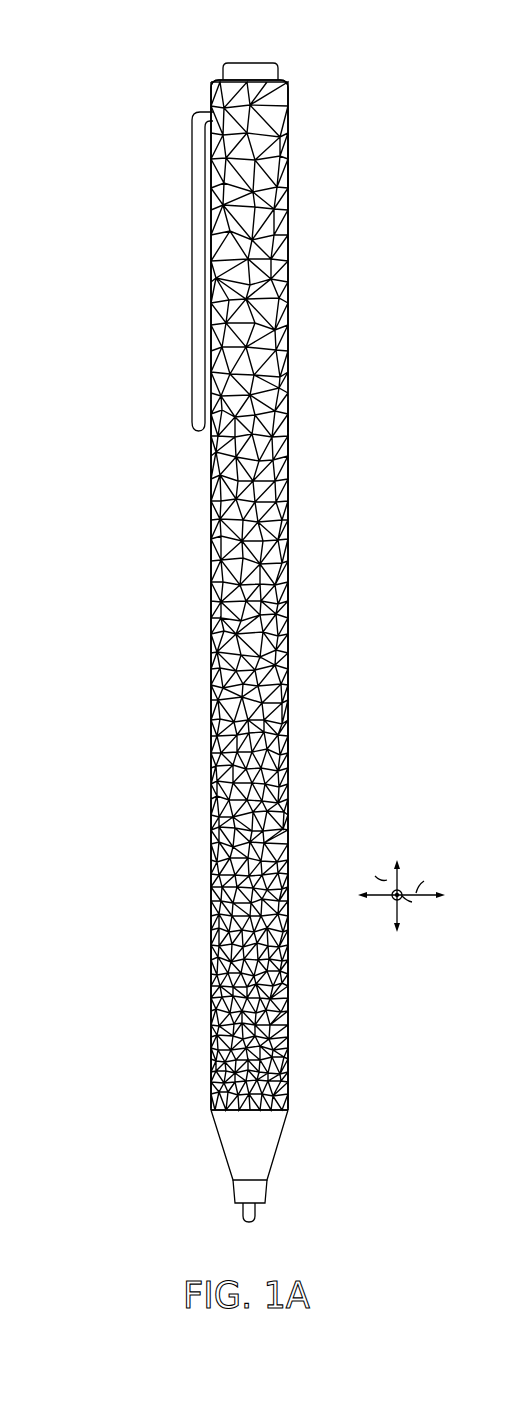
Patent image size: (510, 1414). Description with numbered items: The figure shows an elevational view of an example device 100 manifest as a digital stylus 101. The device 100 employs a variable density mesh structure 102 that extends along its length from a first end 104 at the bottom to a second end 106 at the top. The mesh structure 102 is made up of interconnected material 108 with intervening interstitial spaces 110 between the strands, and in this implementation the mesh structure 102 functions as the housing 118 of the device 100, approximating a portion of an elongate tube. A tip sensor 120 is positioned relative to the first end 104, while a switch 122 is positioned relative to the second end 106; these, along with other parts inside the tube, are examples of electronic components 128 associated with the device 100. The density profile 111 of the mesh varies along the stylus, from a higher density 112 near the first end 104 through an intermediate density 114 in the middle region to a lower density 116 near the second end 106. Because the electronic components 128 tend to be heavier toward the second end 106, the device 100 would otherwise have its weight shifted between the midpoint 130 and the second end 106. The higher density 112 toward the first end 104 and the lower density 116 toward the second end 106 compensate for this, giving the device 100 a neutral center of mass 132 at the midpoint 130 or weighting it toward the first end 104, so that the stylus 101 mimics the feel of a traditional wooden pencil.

The device 100 is at (171, 40).
The digital stylus 101 is at (307, 1262).
The variable density mesh structure 102 is at (211, 454).
The first end 104 is at (299, 1108).
The second end 106 is at (299, 88).
The interconnected material 108 is at (310, 430).
The interstitial spaces 110 is at (286, 440).
The density profile 111 is at (165, 1134).
The higher density 112 is at (191, 1102).
The intermediate density 114 is at (197, 628).
The lower density 116 is at (200, 88).
The housing 118 is at (286, 82).
The tip sensor 120 is at (224, 1190).
The switch 122 is at (257, 62).
The electronic components 128 is at (509, 176).
The midpoint 130 is at (288, 591).
The center of mass 132 is at (316, 743).